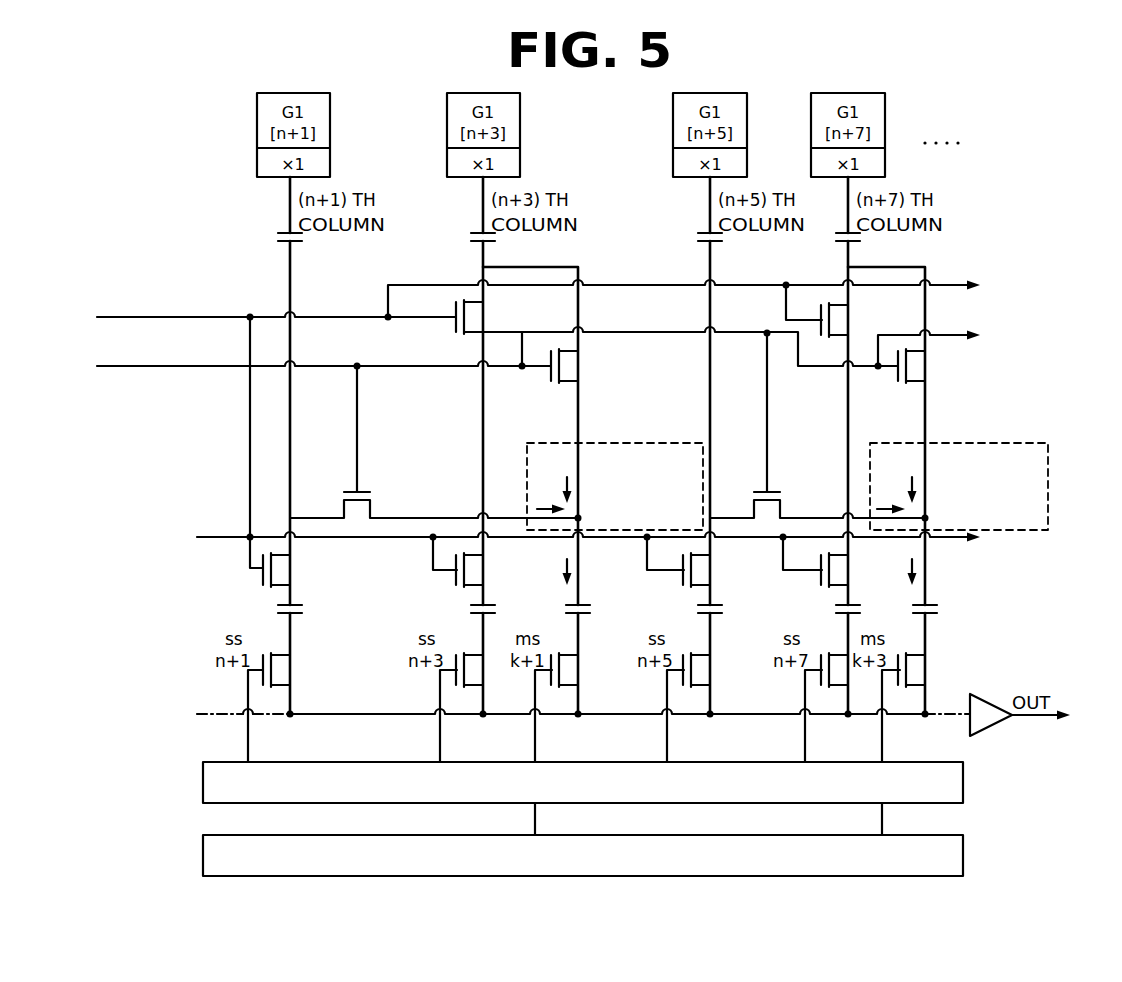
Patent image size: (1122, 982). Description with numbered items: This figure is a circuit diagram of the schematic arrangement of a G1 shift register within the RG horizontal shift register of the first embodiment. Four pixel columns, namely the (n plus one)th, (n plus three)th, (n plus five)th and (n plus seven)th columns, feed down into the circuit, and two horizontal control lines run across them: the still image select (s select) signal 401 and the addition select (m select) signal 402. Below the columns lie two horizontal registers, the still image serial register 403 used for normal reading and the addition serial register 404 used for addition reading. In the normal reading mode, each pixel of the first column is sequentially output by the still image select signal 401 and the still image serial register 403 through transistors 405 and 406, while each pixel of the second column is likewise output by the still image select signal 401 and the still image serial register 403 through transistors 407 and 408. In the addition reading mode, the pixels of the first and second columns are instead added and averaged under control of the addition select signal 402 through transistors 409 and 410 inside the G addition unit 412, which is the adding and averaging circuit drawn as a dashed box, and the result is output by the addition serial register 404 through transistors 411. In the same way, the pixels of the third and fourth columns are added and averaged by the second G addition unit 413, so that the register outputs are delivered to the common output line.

The still image select signal 401 is at (152, 316).
The addition select signal 402 is at (152, 366).
The still image serial register 403 is at (203, 782).
The addition serial register 404 is at (203, 855).
The transistor 405 is at (300, 569).
The transistor 406 is at (300, 666).
The transistor 407 is at (494, 571).
The transistor 408 is at (490, 661).
The transistor 409 is at (386, 489).
The transistor 410 is at (592, 371).
The transistor 411 is at (588, 661).
The G addition unit 412 is at (645, 444).
The G addition unit 413 is at (987, 444).